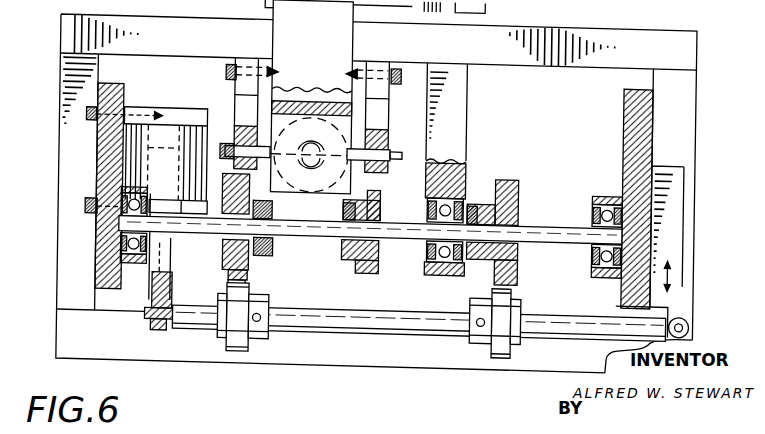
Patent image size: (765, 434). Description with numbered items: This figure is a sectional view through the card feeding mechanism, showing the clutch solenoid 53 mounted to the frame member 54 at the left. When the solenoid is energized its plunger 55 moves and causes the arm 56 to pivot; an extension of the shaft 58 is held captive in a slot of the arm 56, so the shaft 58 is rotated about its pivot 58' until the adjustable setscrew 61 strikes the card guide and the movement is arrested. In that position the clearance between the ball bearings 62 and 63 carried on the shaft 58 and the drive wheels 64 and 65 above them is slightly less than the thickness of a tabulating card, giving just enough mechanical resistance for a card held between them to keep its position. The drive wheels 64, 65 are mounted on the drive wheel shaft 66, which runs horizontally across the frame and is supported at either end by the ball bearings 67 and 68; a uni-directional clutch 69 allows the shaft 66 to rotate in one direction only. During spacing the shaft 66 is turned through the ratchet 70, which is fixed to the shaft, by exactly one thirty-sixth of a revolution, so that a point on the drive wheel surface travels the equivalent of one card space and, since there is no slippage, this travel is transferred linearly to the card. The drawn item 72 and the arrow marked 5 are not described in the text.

The section line 5-5 indicator 5 is at (420, 5).
The clutch solenoid 53 is at (186, 105).
The frame member 54 is at (106, 81).
The plunger 55 is at (164, 262).
The arm 56 is at (162, 322).
The shaft 58 is at (419, 334).
The pivot 58' is at (698, 329).
The adjustable setscrew 61 is at (195, 306).
The ball bearing 62 is at (243, 346).
The ball bearing 63 is at (507, 348).
The drive wheel 64 is at (227, 258).
The drive wheel 65 is at (526, 248).
The drive wheel shaft 66 is at (310, 231).
The ball bearing 67 is at (138, 265).
The ball bearing 68 is at (595, 201).
The uni-directional clutch 69 is at (454, 266).
The ratchet 70 is at (370, 262).
The drum 72 is at (338, 186).